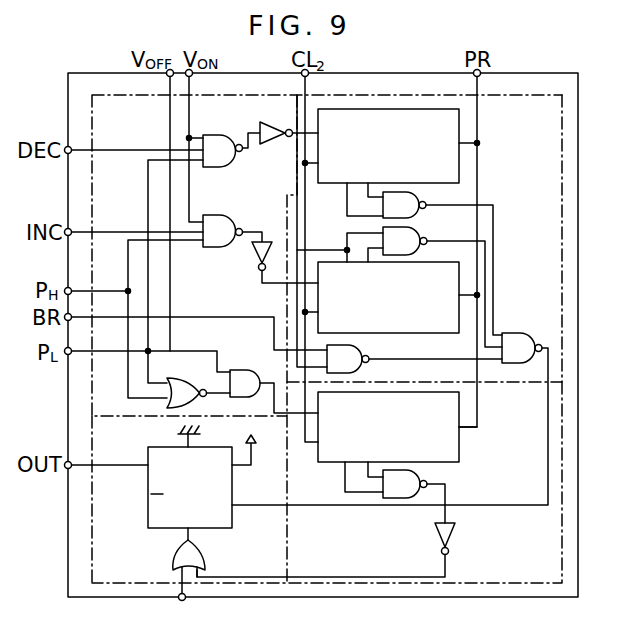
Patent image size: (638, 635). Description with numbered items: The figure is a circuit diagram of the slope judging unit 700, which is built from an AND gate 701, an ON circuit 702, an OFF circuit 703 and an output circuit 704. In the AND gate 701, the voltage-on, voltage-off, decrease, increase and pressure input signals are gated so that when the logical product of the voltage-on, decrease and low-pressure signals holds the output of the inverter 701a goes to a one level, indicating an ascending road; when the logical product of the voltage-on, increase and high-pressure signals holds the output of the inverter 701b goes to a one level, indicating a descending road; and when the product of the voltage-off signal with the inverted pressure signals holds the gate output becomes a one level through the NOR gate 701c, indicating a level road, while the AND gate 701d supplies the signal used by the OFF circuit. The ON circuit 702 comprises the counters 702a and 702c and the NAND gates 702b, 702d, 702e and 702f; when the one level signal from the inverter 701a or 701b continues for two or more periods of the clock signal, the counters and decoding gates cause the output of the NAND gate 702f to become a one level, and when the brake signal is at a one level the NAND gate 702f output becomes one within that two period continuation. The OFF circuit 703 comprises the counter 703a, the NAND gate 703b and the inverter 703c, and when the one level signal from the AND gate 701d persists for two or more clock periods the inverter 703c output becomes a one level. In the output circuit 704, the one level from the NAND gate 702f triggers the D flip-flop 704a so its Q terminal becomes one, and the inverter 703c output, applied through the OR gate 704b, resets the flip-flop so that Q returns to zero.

The slope judging unit 700 is at (579, 130).
The AND gate 701 is at (100, 94).
The inverter 701a is at (270, 123).
The inverter 701b is at (250, 253).
The NOR gate 701c is at (199, 377).
The AND gate 701d is at (262, 369).
The ON circuit 702 is at (562, 222).
The counter 702a is at (460, 120).
The NAND gate 702b is at (414, 192).
The counter 702c is at (460, 277).
The NAND gate 702d is at (414, 223).
The NAND gate 702e is at (355, 346).
The NAND gate 702f is at (524, 333).
The OFF circuit 703 is at (562, 452).
The counter 703a is at (459, 438).
The NAND gate 703b is at (420, 472).
The inverter 703c is at (456, 524).
The output circuit 704 is at (90, 503).
The flip-flop 704a is at (148, 515).
The OR gate 704b is at (203, 556).